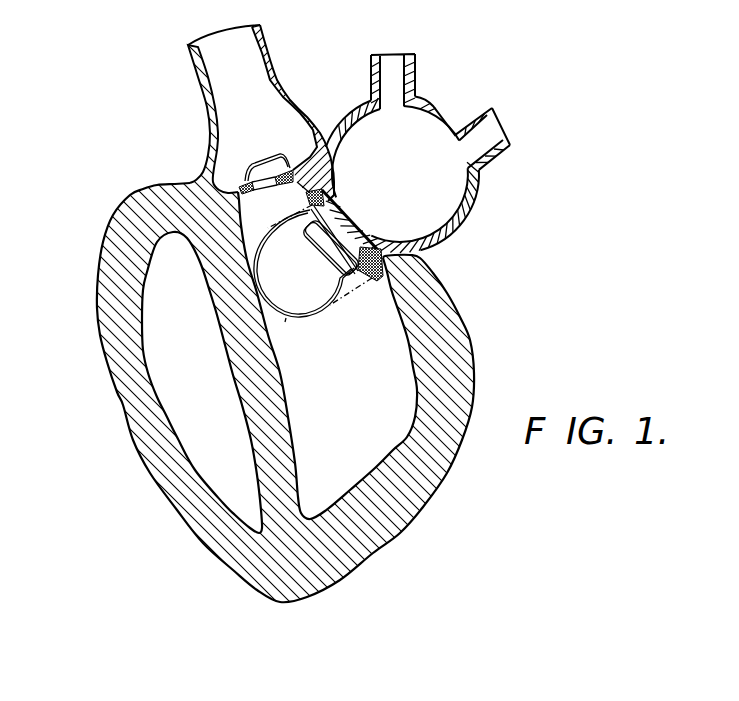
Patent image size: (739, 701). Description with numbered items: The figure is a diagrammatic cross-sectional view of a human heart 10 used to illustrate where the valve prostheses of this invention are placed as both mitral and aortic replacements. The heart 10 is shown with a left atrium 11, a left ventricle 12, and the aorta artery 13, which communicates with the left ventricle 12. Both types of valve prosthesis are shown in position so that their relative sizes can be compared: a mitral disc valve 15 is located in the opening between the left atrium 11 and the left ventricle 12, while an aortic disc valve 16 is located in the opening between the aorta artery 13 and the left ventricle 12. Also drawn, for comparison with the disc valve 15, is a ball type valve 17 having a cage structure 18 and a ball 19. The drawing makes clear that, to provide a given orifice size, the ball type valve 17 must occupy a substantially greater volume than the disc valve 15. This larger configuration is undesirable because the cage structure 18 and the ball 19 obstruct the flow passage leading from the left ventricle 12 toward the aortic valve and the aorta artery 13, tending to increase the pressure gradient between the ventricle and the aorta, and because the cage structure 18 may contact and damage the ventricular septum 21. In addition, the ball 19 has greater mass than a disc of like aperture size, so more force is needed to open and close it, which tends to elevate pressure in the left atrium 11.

The human heart 10 is at (486, 203).
The left atrium 11 is at (406, 183).
The left ventricle 12 is at (344, 424).
The aorta artery 13 is at (254, 130).
The mitral disc valve 15 is at (368, 222).
The aortic disc valve 16 is at (282, 197).
The ball type valve 17 is at (314, 333).
The cage structure 18 is at (285, 322).
The ball 19 is at (326, 292).
The ventricular septum 21 is at (265, 373).